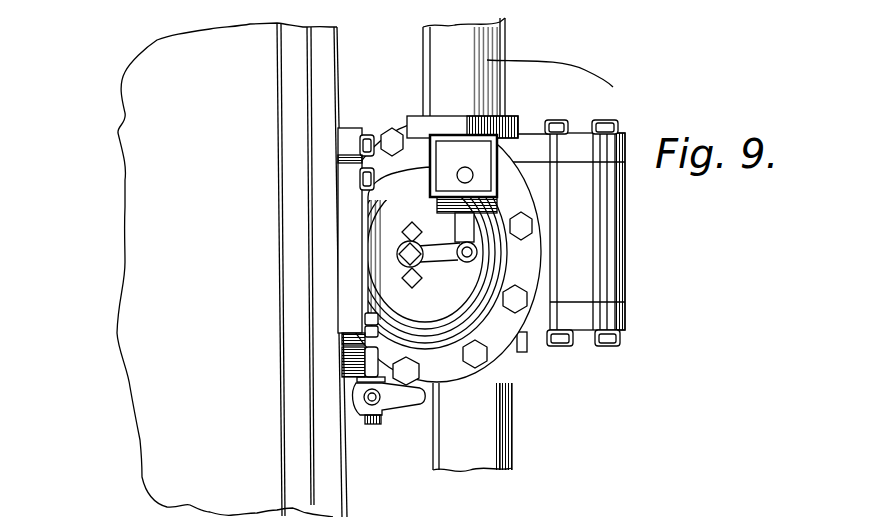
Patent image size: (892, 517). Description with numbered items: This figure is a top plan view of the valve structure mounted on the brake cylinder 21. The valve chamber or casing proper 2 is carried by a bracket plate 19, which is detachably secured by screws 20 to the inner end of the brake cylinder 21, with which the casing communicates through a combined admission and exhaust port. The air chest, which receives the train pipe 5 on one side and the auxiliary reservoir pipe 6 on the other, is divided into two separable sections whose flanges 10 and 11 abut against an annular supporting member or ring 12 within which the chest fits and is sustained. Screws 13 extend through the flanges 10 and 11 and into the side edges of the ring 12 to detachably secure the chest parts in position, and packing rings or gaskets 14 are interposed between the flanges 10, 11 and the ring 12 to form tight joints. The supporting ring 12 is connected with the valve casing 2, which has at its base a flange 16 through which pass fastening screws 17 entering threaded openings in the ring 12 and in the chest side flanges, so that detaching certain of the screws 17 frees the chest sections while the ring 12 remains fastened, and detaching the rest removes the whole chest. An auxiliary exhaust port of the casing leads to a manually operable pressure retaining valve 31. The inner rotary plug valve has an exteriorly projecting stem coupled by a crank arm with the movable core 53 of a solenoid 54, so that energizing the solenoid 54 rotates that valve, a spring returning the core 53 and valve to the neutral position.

The valve chamber or casing proper 2 is at (505, 343).
The train pipe 5 is at (559, 81).
The auxiliary reservoir pipe 6 is at (497, 428).
The flange 10 is at (617, 320).
The flange 11 is at (660, 126).
The annular supporting member or ring 12 is at (613, 243).
The screws 13 is at (612, 346).
The packing rings or gaskets 14 is at (670, 309).
The flange 16 is at (450, 368).
The fastening screws 17 is at (528, 232).
The bracket plate 19 is at (347, 140).
The screws 20 is at (380, 187).
The brake cylinder 21 is at (232, 270).
The manually operable pressure retaining valve 31 is at (380, 407).
The movable core 53 is at (457, 226).
The solenoid 54 is at (527, 140).